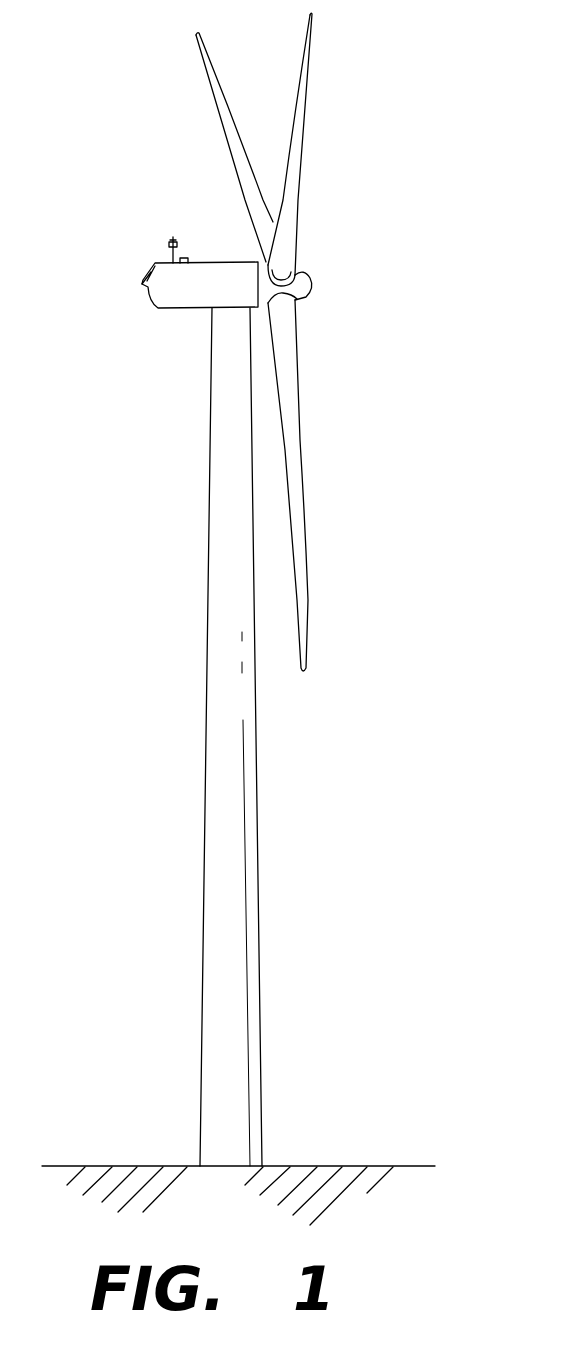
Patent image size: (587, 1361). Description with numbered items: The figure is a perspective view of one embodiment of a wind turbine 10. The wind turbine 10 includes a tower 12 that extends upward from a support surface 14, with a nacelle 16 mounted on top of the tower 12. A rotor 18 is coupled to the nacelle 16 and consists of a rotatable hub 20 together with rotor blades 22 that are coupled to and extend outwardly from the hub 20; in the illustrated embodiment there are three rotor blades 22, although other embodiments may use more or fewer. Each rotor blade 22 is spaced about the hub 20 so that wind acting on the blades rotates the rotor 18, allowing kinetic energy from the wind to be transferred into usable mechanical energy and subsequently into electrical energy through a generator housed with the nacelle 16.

The wind turbine 10 is at (423, 120).
The tower 12 is at (217, 853).
The support surface 14 is at (330, 1165).
The nacelle 16 is at (188, 312).
The rotor 18 is at (330, 296).
The rotatable hub 20 is at (305, 285).
The rotor blade 22 is at (218, 117).